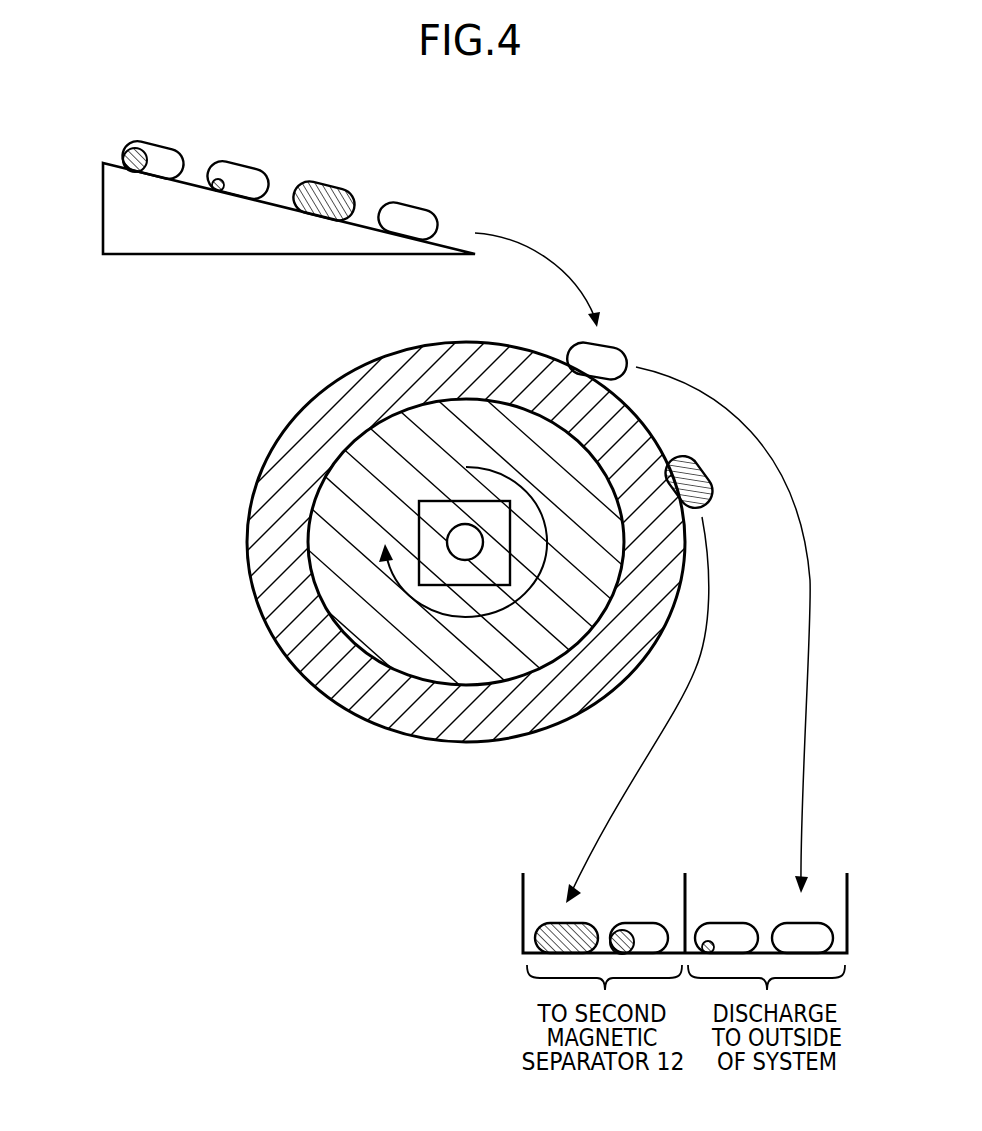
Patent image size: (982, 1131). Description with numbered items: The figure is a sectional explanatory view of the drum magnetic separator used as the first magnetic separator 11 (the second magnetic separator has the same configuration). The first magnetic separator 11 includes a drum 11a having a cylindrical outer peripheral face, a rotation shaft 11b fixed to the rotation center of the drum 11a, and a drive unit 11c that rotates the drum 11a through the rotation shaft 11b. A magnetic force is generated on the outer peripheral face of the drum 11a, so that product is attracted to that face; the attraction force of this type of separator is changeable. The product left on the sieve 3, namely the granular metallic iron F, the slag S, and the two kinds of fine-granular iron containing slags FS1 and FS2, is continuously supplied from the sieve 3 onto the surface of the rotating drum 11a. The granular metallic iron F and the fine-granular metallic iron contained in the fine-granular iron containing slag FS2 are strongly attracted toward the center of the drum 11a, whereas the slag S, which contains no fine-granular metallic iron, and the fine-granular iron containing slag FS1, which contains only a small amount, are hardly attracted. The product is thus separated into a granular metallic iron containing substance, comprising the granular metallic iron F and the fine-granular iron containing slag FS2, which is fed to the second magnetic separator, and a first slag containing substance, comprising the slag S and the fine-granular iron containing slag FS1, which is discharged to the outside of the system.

The sieve 3 is at (122, 222).
The fine-granular iron containing slag FS2 is at (157, 155).
The fine-granular iron containing slag FS1 is at (251, 178).
The granular metallic iron F is at (331, 193).
The slag S is at (410, 215).
The first magnetic separator 11 is at (491, 601).
The drum 11a is at (340, 408).
The rotation shaft 11b is at (465, 540).
The drive unit 11c is at (430, 500).